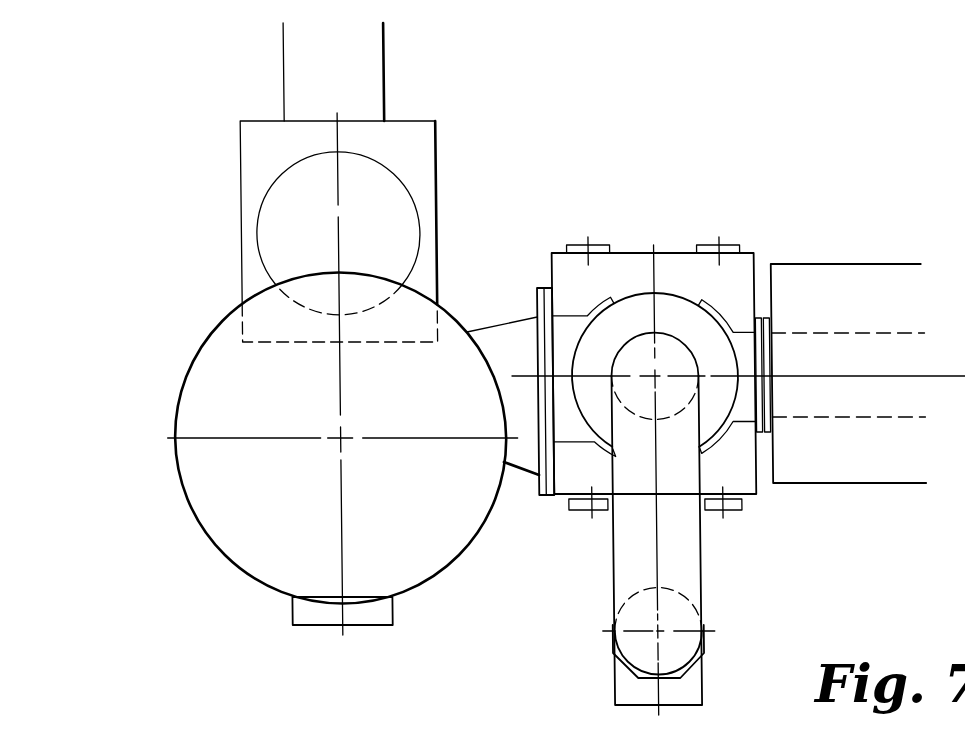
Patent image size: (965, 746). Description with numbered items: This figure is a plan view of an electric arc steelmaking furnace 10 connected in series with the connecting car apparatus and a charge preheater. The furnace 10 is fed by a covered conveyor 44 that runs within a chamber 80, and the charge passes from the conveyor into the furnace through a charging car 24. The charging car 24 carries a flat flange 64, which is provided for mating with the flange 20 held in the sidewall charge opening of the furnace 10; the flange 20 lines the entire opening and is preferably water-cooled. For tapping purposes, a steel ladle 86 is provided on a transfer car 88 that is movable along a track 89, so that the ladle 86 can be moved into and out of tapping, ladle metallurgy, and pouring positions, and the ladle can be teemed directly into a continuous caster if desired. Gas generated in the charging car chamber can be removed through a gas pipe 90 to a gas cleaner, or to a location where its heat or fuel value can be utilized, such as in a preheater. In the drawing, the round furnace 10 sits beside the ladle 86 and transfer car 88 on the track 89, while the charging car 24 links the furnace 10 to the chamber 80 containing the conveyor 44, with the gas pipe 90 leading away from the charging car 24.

The electric arc furnace 10 is at (177, 470).
The flange 20 is at (541, 500).
The charging car 24 is at (671, 250).
The covered conveyor 44 is at (858, 417).
The flat flange 64 is at (548, 497).
The chamber 80 is at (851, 483).
The steel ladle 86 is at (422, 232).
The transfer car 88 is at (439, 150).
The track 89 is at (387, 68).
The gas pipe 90 is at (698, 582).